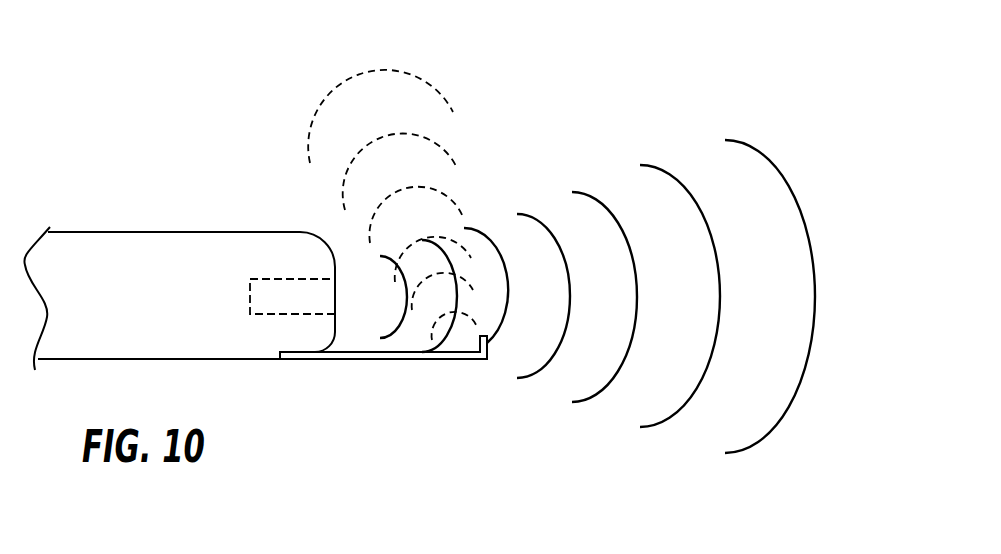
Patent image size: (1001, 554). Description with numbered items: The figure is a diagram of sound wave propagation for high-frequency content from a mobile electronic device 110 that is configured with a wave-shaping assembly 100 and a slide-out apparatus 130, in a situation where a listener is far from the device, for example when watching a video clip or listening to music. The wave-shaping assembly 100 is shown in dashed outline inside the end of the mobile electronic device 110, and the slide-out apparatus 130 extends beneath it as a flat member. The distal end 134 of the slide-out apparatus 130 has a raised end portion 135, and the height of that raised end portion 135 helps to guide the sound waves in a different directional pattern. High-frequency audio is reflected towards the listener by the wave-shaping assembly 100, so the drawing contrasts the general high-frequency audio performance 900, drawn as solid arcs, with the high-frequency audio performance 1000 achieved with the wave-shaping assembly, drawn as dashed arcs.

The wave-shaping assembly 100 is at (315, 288).
The mobile electronic device 110 is at (128, 227).
The slide-out apparatus 130 is at (332, 362).
The distal end 134 is at (477, 363).
The raised end portion 135 is at (493, 357).
The general high-frequency audio performance 900 is at (486, 232).
The high-frequency audio performance 1000 is at (305, 103).